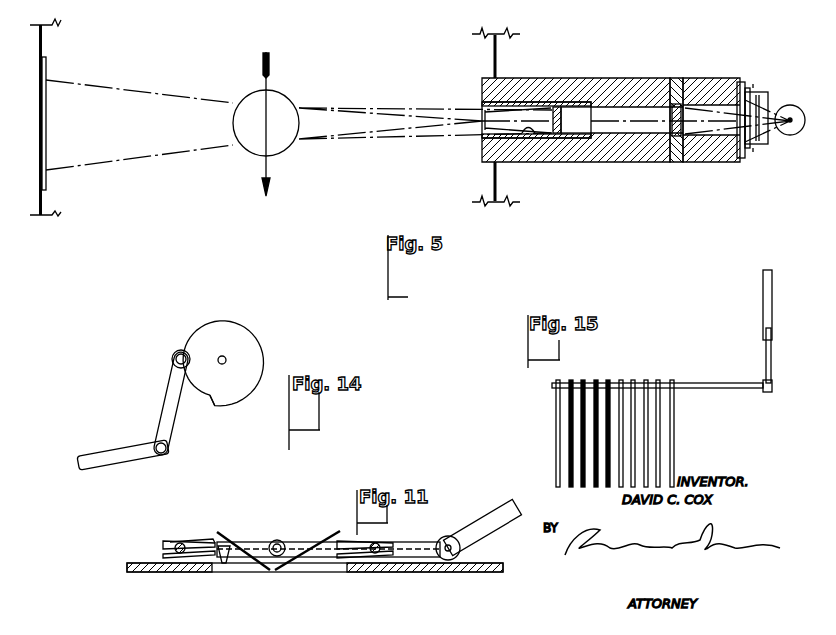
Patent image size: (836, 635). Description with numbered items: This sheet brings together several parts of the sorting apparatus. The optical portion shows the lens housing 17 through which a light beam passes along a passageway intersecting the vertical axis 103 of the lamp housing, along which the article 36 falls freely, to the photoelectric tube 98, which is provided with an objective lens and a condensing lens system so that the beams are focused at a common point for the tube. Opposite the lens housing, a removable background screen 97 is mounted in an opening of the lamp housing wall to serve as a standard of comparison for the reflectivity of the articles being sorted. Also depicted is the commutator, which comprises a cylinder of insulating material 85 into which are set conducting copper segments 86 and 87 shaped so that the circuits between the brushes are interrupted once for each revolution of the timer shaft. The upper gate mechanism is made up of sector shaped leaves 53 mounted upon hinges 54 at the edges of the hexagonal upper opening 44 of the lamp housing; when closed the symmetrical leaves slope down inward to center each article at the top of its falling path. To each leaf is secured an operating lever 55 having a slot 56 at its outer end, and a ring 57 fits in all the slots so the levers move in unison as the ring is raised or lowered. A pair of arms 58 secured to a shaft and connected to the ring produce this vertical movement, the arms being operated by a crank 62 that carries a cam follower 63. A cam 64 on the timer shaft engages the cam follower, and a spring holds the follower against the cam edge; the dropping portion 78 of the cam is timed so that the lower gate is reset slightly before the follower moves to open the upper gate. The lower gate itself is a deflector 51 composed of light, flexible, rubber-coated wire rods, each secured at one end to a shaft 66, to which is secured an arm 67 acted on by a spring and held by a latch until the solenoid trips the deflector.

In FIG. 5, the background screen 97 is at (47, 128).
In FIG. 5, the article 36 is at (284, 92).
In FIG. 5, the axis of the lamp housing 103 is at (267, 162).
In FIG. 5, the copper segment 87 is at (722, 78).
In FIG. 5, the cylinder of insulating material 85 is at (528, 130).
In FIG. 5, the copper segment 86 is at (566, 125).
In FIG. 5, the lens housing 17 is at (640, 163).
In FIG. 5, the photoelectric tube 98 is at (790, 136).
In FIG. 14, the cam follower 63 is at (176, 354).
In FIG. 14, the cam 64 is at (245, 325).
In FIG. 14, the crank 62 is at (163, 413).
In FIG. 11, the crank 62 is at (506, 531).
In FIG. 14, the dropping portion of the cam 78 is at (212, 403).
In FIG. 14, the arm 58 is at (105, 462).
In FIG. 11, the arm 58 is at (299, 542).
In FIG. 11, the ring 57 is at (180, 543).
In FIG. 11, the operating lever 55 is at (200, 544).
In FIG. 11, the slot 56 is at (170, 547).
In FIG. 11, the upper opening of the lamp housing 44 is at (213, 573).
In FIG. 11, the hinge 54 is at (226, 563).
In FIG. 11, the sector shaped leaf 53 is at (282, 566).
In FIG. 15, the arm 67 is at (771, 304).
In FIG. 15, the shaft 66 is at (722, 383).
In FIG. 15, the deflector 51 is at (674, 418).